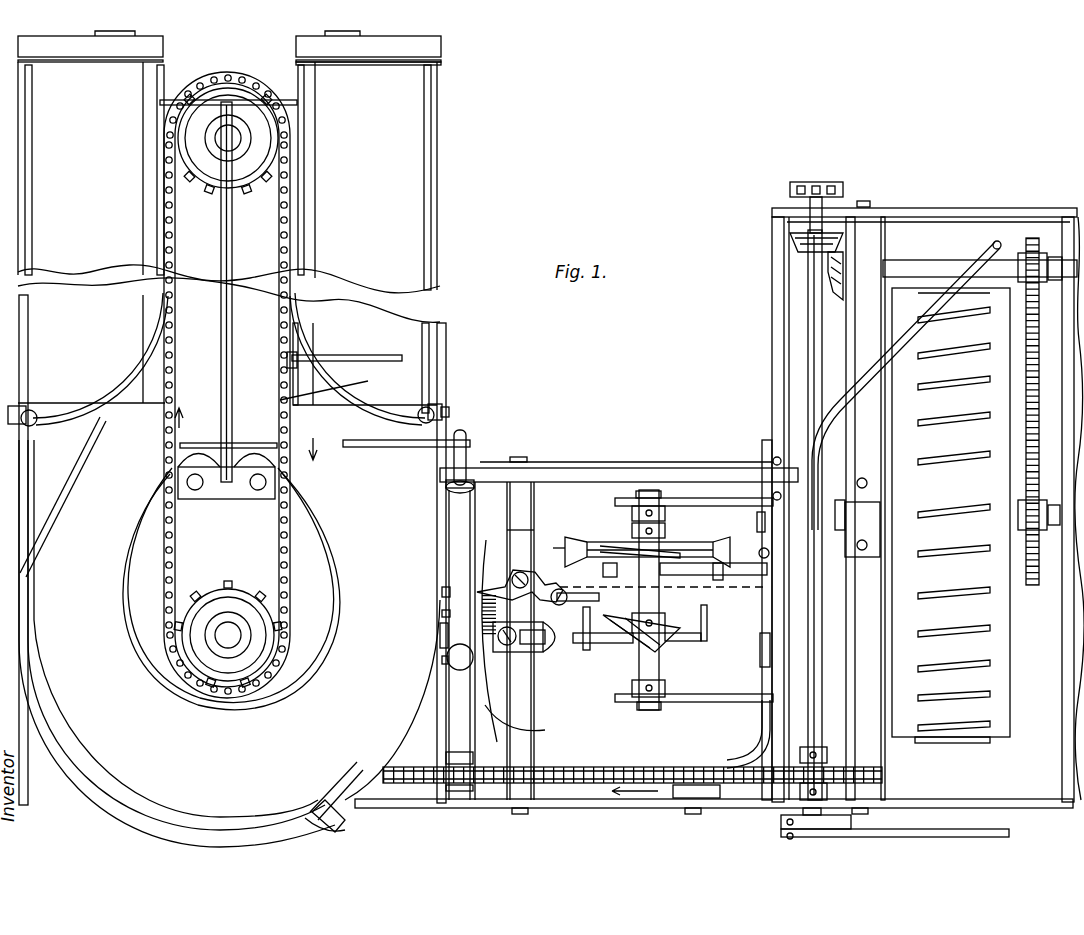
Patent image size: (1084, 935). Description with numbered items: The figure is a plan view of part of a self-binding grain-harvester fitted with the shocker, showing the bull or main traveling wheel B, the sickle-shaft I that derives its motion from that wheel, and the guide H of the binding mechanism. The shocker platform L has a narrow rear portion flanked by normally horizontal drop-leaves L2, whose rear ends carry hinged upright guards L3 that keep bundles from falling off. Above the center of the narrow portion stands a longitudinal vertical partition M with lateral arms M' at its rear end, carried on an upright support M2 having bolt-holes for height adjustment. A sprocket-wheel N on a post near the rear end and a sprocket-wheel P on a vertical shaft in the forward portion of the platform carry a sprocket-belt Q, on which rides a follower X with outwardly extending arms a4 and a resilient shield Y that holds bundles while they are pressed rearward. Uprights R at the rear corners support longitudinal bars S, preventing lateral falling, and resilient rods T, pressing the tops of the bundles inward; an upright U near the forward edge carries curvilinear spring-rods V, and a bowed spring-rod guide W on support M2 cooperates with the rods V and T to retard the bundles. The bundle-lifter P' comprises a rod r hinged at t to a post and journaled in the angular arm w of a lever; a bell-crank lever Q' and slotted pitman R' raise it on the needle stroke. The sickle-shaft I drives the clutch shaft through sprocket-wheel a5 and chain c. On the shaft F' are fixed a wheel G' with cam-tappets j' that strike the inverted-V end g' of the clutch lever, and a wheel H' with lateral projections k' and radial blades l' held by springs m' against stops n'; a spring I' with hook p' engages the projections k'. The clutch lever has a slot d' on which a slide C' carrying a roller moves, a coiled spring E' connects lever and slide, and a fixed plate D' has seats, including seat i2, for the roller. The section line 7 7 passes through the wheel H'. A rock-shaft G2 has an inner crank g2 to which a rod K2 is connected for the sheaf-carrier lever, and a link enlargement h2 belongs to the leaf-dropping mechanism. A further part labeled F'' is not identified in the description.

The upright guards L3 is at (163, 47).
The drop-leaves L2 is at (400, 222).
The platform L is at (229, 643).
The longitudinal bars S is at (32, 205).
The resilient rods T is at (297, 246).
The uprights R is at (236, 403).
The sprocket-wheel N is at (258, 142).
The partition M is at (240, 292).
The lateral arms M' is at (262, 111).
The upright support M2 is at (210, 499).
The enlargement h2 is at (250, 442).
The sprocket-belt Q is at (240, 385).
The sprocket-wheel P is at (259, 634).
The guide W is at (336, 605).
The follower X is at (297, 358).
The resilient shield Y is at (332, 388).
The arms a4 is at (372, 352).
The curvilinear spring-rods V is at (146, 800).
The upright U is at (334, 802).
The bundle-lifter P' is at (487, 457).
The angular arm w is at (455, 492).
The hinge connection t is at (460, 670).
The coiled spring E' is at (424, 637).
The rock-shaft G2 is at (660, 468).
The shaft F' is at (690, 600).
The shaft lower end F'' is at (649, 723).
The wheel H' is at (666, 544).
The springs m' is at (652, 533).
The radial blades l' is at (720, 544).
The stops n' is at (753, 552).
The section line 7- 7 is at (654, 568).
The bell-crank lever Q' is at (521, 583).
The slotted pitman R' is at (575, 587).
The lateral projections k' is at (603, 616).
The cam-tappets j' is at (698, 621).
The wheel G' is at (659, 647).
The hook p' is at (677, 599).
The spring I' is at (712, 593).
The seat i2 is at (500, 655).
The longitudinal slot d' is at (524, 649).
The reduced end g' is at (547, 649).
The rod r is at (507, 645).
The slide C' is at (504, 641).
The plate D' is at (525, 723).
The sprocket-wheel a5 is at (882, 776).
The chain c is at (700, 768).
The guide H is at (928, 489).
The bull wheel B is at (925, 483).
The sickle-shaft I is at (830, 491).
The rod K2 is at (850, 385).
The inner crank g2 is at (835, 515).